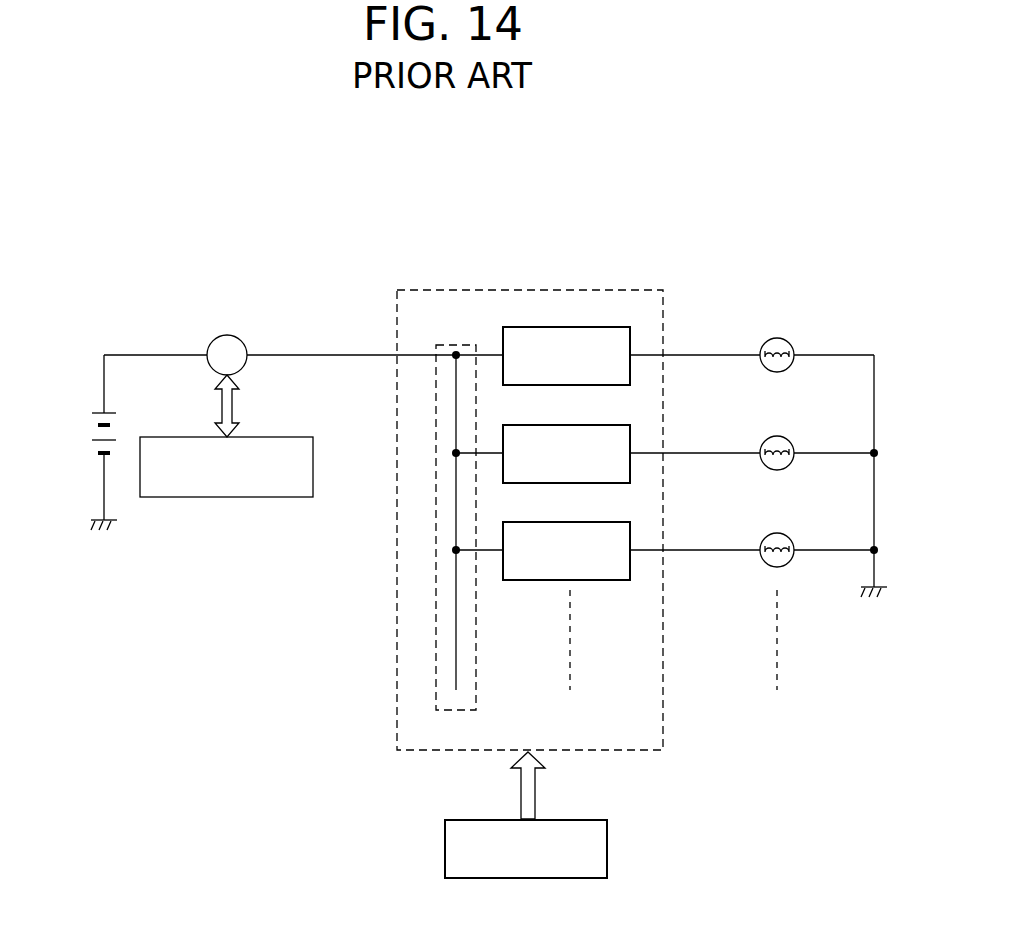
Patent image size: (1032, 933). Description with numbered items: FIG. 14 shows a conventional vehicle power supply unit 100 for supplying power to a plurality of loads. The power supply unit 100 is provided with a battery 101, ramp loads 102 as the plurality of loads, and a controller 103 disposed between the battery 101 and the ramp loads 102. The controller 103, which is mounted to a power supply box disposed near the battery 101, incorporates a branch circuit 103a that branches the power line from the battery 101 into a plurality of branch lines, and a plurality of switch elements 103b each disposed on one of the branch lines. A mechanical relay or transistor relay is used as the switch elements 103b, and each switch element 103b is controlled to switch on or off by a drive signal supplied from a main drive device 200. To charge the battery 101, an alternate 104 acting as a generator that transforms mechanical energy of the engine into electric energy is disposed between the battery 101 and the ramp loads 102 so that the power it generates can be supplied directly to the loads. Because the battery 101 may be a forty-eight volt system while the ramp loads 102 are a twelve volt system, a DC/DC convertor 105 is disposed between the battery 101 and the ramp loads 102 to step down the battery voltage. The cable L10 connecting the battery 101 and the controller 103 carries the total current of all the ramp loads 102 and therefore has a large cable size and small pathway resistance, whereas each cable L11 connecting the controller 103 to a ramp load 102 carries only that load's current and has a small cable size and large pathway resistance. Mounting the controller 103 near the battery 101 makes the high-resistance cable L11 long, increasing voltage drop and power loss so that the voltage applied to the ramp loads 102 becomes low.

The power supply unit 100 is at (697, 207).
The battery 101 is at (96, 413).
The ramp loads 102 is at (791, 348).
The controller 103 is at (585, 290).
The branch circuit 103a is at (456, 345).
The switch elements 103b is at (555, 327).
The alternate 104 is at (248, 352).
The DC/DC convertor 105 is at (222, 498).
The main drive device 200 is at (607, 853).
The cable L10 is at (354, 358).
The cable L11 is at (714, 355).